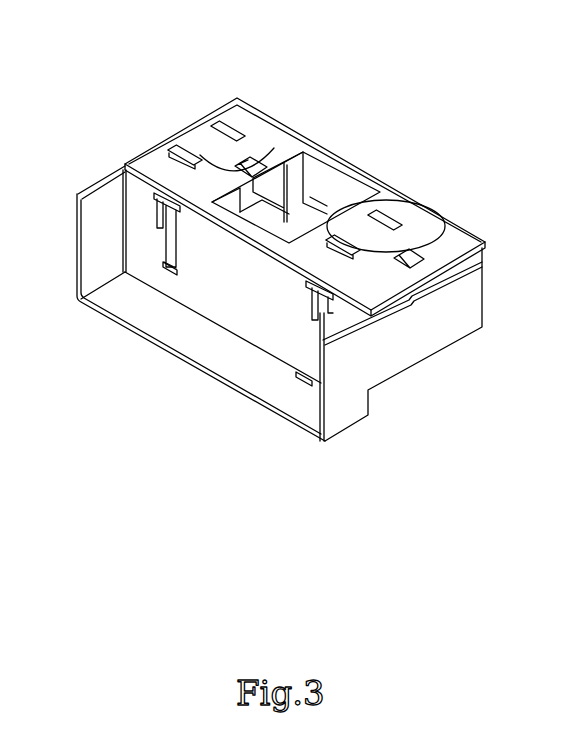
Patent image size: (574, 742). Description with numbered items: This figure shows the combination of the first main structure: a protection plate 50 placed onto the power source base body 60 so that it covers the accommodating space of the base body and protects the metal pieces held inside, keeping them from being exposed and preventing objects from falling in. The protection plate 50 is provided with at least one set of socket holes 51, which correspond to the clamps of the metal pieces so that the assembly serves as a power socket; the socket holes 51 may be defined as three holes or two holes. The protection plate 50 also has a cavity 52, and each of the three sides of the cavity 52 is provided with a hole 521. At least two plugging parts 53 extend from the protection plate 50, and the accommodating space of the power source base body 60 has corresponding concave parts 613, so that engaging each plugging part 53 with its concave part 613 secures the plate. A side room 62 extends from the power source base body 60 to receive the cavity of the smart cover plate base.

The protection plate 50 is at (203, 137).
The socket hole 51 is at (232, 128).
The cavity 52 is at (337, 197).
The hole 521 is at (265, 207).
The plugging part 53 is at (160, 213).
The power source base body 60 is at (462, 317).
The side room 62 is at (207, 340).
The concave part 613 is at (170, 267).